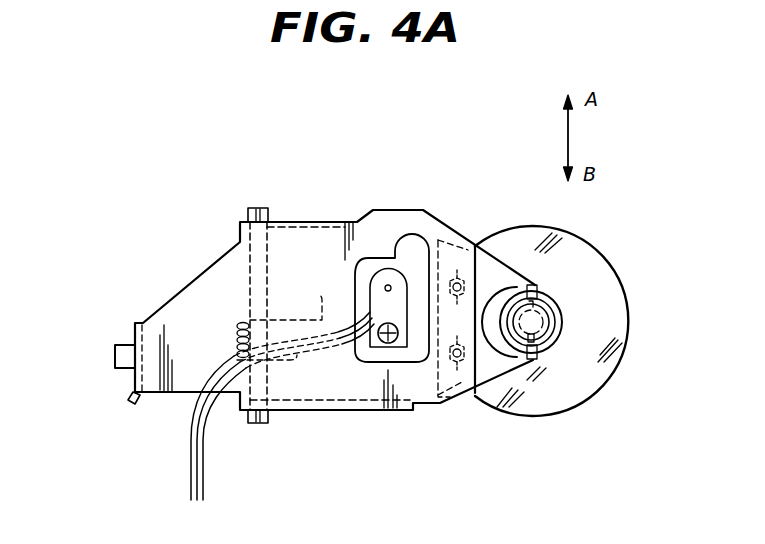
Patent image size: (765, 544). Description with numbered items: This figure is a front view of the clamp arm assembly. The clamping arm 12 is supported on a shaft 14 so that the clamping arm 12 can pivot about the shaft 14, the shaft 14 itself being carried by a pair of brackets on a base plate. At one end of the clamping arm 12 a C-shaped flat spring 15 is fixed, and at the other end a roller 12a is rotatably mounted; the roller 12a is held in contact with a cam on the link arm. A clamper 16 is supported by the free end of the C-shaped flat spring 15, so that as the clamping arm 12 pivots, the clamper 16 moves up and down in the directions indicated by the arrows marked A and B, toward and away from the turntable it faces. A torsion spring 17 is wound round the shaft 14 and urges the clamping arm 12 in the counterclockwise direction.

The clamping arm 12 is at (378, 227).
The roller 12a is at (125, 345).
The shaft 14 is at (248, 268).
The C-shaped flat spring 15 is at (493, 268).
The clamper 16 is at (623, 323).
The torsion spring 17 is at (284, 318).